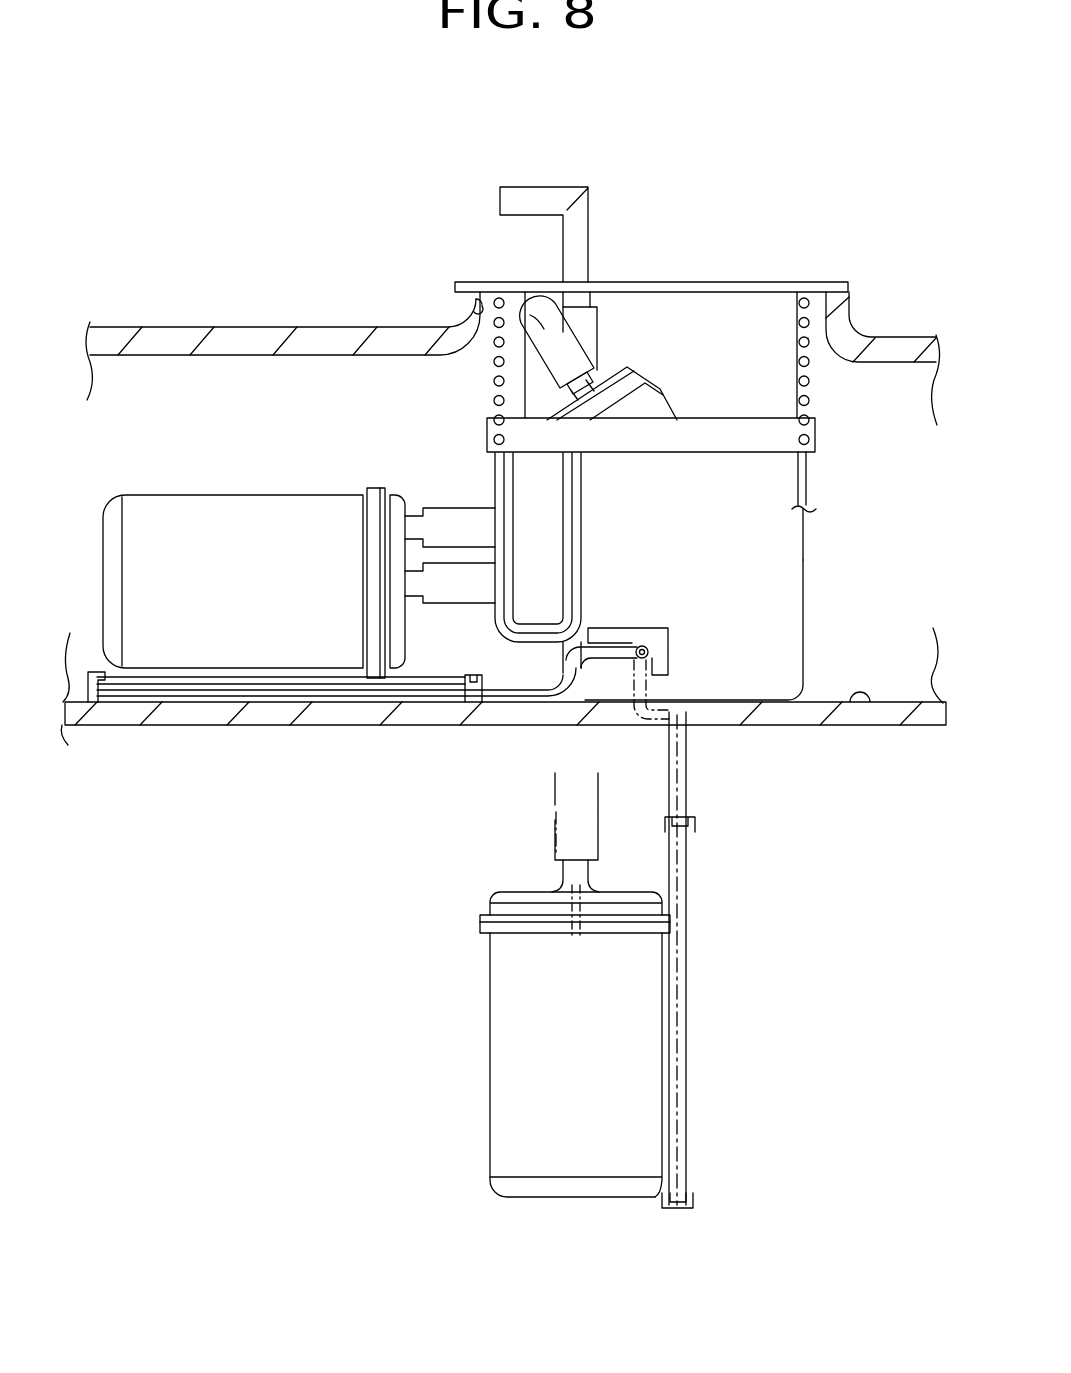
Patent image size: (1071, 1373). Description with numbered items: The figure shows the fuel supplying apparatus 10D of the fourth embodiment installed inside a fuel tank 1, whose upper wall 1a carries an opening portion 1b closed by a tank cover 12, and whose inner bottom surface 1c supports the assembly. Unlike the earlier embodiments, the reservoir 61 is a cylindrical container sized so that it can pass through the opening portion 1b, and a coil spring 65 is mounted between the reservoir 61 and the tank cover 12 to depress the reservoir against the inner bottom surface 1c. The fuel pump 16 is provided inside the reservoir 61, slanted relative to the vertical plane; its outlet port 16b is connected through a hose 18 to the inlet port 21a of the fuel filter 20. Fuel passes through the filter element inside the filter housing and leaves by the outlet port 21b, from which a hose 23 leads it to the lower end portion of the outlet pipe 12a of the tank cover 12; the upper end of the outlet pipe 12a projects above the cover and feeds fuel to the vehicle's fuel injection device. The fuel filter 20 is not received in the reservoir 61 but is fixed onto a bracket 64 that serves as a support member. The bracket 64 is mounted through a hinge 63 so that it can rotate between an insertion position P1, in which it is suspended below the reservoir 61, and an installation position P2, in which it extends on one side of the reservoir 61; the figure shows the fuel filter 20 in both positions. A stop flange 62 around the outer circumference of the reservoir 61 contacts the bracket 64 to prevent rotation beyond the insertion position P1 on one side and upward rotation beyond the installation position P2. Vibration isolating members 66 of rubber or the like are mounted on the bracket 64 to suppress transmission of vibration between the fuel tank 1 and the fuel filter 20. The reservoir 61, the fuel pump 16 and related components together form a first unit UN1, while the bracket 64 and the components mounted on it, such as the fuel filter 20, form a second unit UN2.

The fuel tank 1 is at (170, 325).
The housing upper wall 1a is at (249, 340).
The opening portion 1b is at (478, 312).
The inner bottom surface 1c is at (868, 703).
The fuel supplying apparatus 10D is at (320, 165).
The tank cover 12 is at (780, 297).
The outlet pipe 12a is at (543, 195).
The fuel pump 16 is at (657, 408).
The outlet port 16b is at (603, 333).
The hose 18 is at (538, 312).
The fuel filter 20 is at (275, 525).
The inlet port 21a is at (415, 522).
The outlet port 21b is at (412, 598).
The hose 23 is at (589, 330).
The reservoir 61 is at (778, 568).
The stop flange 62 is at (616, 629).
The hinge 63 is at (648, 645).
The bracket 64 is at (300, 691).
The coil spring 65 is at (808, 338).
The vibration isolating members 66 is at (93, 703).
The first unit UN1 is at (840, 497).
The second unit UN2 is at (201, 486).
The insertion position P1 is at (471, 1042).
The installation position P2 is at (347, 470).